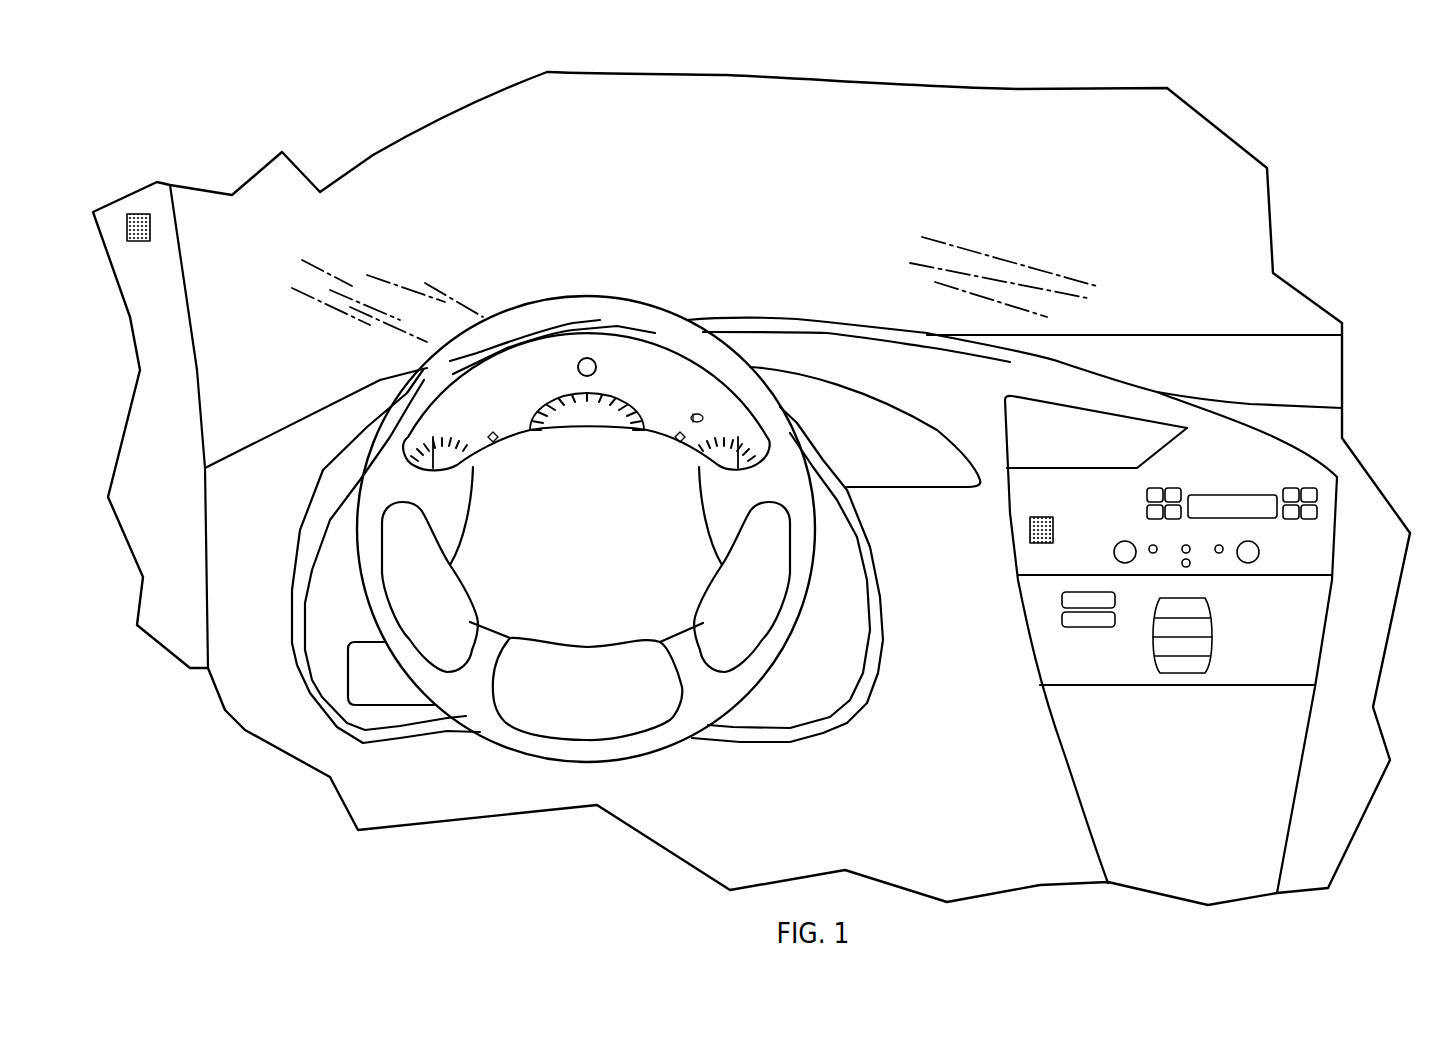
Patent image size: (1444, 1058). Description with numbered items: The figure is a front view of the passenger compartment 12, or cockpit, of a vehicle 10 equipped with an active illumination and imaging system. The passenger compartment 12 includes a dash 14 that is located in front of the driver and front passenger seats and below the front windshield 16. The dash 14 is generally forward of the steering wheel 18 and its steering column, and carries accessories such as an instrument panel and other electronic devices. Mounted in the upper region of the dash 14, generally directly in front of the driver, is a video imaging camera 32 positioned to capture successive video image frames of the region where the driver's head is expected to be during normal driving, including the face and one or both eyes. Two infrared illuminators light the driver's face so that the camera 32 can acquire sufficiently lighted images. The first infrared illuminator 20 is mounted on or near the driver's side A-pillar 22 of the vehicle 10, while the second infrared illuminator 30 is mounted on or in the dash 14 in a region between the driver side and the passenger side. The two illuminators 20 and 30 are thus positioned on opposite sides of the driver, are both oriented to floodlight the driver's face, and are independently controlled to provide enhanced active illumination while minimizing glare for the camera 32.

The vehicle 10 is at (1357, 105).
The passenger compartment 12 is at (957, 867).
The dash 14 is at (1157, 405).
The front windshield 16 is at (1212, 182).
The steering wheel 18 is at (586, 505).
The first infrared illuminator 20 is at (133, 213).
The driver's side A-pillar 22 is at (185, 402).
The second infrared illuminator 30 is at (1055, 527).
The video imaging camera 32 is at (577, 358).